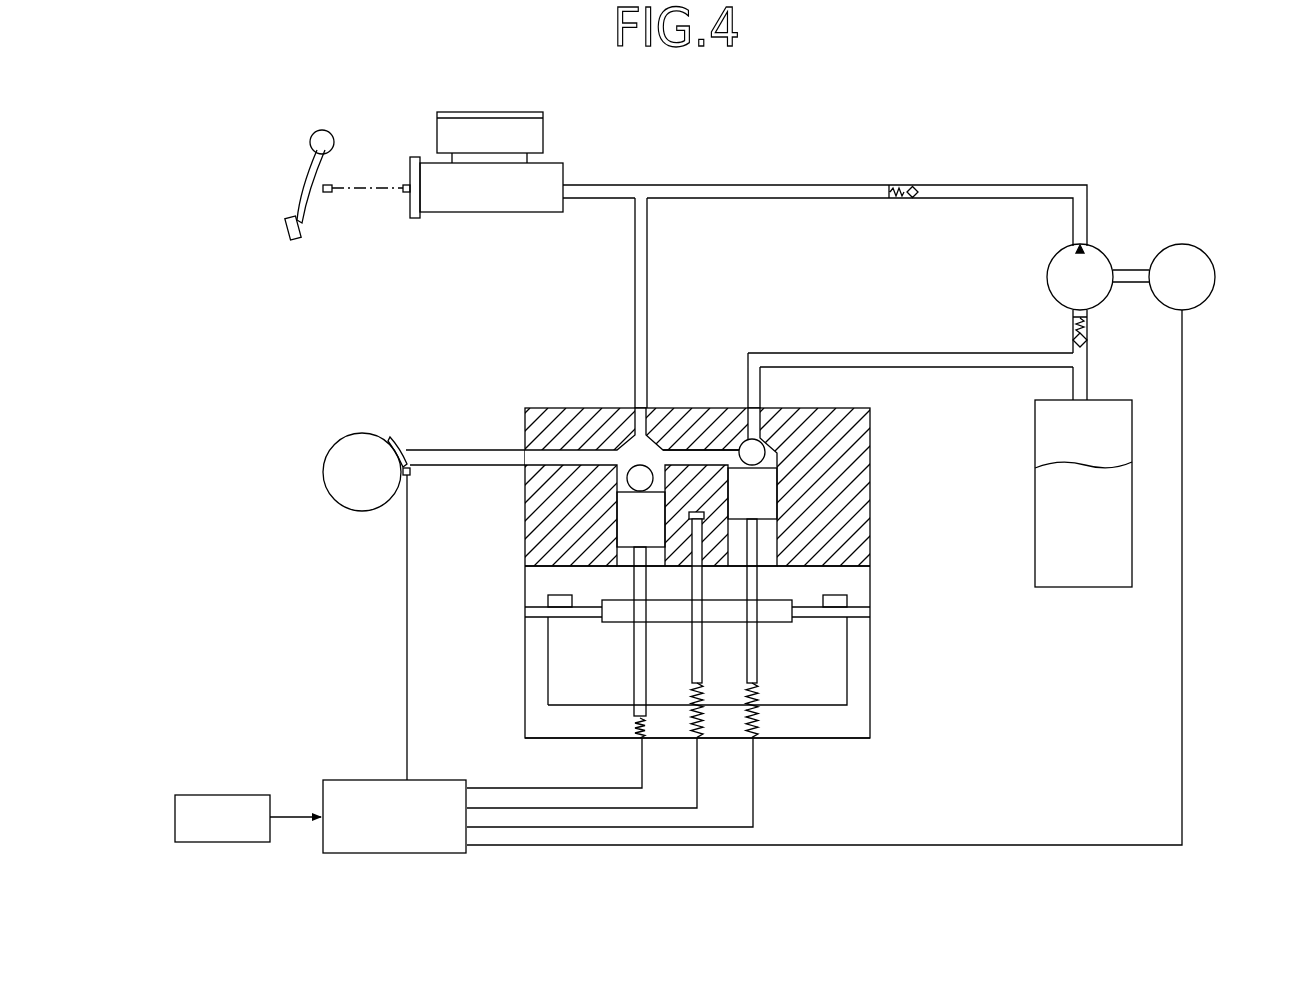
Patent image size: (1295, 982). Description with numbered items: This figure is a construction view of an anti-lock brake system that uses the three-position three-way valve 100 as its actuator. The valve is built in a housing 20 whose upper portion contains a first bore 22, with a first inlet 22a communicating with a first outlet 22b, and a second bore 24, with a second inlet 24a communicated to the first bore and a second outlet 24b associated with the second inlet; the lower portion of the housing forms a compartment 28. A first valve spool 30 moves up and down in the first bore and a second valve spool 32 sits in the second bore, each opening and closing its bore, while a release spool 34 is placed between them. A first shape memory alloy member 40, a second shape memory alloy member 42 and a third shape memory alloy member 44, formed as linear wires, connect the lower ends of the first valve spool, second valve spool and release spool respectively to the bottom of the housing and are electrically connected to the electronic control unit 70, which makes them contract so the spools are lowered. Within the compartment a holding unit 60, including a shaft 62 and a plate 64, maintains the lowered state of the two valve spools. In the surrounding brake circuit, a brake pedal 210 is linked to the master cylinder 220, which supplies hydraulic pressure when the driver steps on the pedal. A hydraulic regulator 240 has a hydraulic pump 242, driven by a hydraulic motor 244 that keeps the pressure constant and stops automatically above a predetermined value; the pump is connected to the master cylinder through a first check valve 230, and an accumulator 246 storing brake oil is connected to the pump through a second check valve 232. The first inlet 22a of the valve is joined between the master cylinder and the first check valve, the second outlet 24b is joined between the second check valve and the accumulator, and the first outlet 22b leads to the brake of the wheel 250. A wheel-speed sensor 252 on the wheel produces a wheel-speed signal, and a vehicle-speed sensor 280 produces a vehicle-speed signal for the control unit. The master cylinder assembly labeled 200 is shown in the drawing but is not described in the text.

The housing 20 is at (870, 453).
The first bore 22 is at (618, 453).
The first inlet 22a is at (637, 410).
The first outlet 22b is at (547, 458).
The second bore 24 is at (770, 547).
The second inlet 24a is at (697, 460).
The second outlet 24b is at (752, 410).
The compartment 28 is at (530, 588).
The first valve spool 30 is at (640, 650).
The second valve spool 32 is at (760, 583).
The release spool 34 is at (690, 668).
The first shape memory alloy member 40 is at (645, 722).
The second shape memory alloy member 42 is at (757, 690).
The third shape memory alloy member 44 is at (702, 720).
The holding unit 60 is at (585, 688).
The shaft 62 is at (860, 613).
The plate 64 is at (555, 632).
The electronic control unit 70 is at (352, 780).
The 3-position 3-way valve 100 is at (875, 718).
The master cylinder assembly 200 is at (441, 90).
The brake pedal 210 is at (320, 173).
The master cylinder 220 is at (543, 135).
The first check valve 230 is at (900, 183).
The second check valve 232 is at (1090, 320).
The hydraulic regulator 240 is at (1270, 241).
The hydraulic pump 242 is at (1060, 282).
The hydraulic motor 244 is at (1198, 297).
The accumulator 246 is at (1132, 497).
The wheel 250 is at (323, 465).
The wheel-speed sensor 252 is at (410, 474).
The vehicle-speed sensor 280 is at (213, 795).